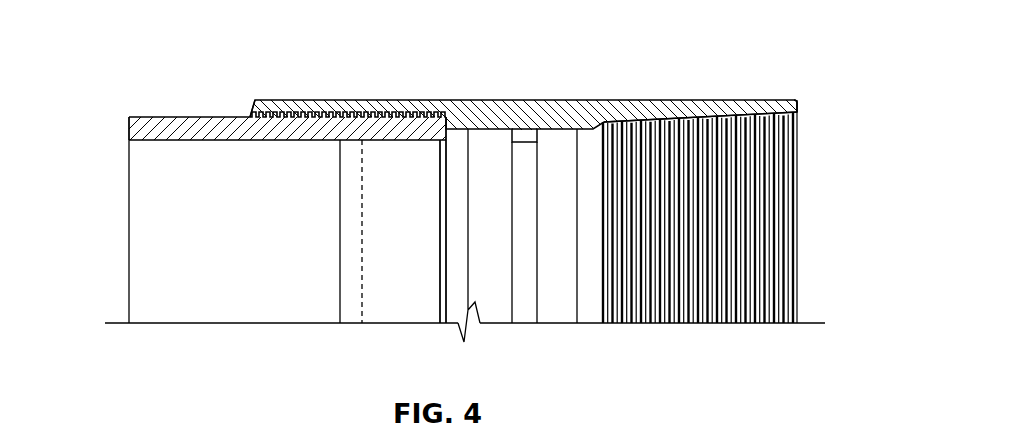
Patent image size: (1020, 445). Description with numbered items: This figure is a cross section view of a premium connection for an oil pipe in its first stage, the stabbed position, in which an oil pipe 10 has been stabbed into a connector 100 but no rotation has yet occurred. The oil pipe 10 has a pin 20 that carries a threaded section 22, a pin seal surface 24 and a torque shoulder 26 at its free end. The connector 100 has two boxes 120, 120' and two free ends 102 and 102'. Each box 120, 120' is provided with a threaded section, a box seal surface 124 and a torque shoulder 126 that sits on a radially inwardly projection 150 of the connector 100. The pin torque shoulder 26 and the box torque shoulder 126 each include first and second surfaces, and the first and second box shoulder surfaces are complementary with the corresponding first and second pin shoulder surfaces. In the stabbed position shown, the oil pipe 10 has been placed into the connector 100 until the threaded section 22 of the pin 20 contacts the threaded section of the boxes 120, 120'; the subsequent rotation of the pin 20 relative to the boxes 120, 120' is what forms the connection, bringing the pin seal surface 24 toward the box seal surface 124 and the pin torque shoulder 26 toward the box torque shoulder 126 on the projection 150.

The oil pipe 10 is at (259, 242).
The pin 20 is at (119, 88).
The threaded section 22 is at (150, 117).
The pin seal surface 24 is at (393, 120).
The torque shoulder 26 is at (443, 129).
The connector 100 is at (672, 92).
The free end 102 is at (235, 82).
The free end 102' is at (843, 121).
The box 120 is at (538, 77).
The box 120' is at (700, 64).
The box seal surface 124 is at (593, 127).
The torque shoulder 126 is at (447, 130).
The radially inwardly projection 150 is at (523, 132).